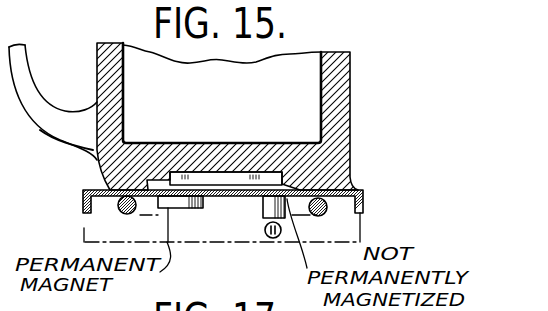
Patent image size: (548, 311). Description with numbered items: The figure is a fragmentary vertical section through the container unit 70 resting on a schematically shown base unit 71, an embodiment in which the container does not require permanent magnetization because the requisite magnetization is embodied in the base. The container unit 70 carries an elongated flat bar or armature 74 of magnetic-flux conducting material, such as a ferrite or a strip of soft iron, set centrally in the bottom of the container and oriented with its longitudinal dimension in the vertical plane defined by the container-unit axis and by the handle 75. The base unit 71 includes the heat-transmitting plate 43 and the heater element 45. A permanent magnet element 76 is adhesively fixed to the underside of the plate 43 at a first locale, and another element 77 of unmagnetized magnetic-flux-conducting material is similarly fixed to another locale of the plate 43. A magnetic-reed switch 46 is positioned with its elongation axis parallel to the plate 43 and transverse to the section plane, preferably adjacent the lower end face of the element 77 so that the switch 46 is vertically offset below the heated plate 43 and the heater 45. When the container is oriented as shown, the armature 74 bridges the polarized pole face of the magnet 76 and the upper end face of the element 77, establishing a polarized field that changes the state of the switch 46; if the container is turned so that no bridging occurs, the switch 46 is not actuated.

The container unit 70 is at (353, 116).
The handle 75 is at (24, 57).
The armature 74 is at (221, 171).
The heat-transmitting plate 43 is at (360, 191).
The heater element 45 is at (118, 207).
The permanent magnet element 76 is at (173, 209).
The element of unmagnetized magnetic-flux-conducting material 77 is at (264, 209).
The magnetic-reed switch 46 is at (267, 237).
The base unit 71 is at (361, 231).